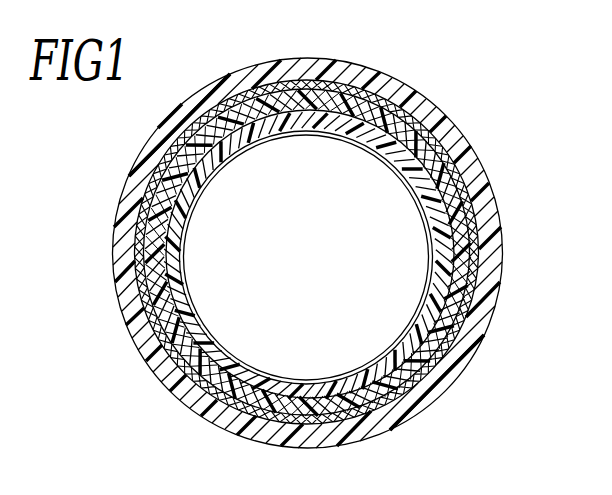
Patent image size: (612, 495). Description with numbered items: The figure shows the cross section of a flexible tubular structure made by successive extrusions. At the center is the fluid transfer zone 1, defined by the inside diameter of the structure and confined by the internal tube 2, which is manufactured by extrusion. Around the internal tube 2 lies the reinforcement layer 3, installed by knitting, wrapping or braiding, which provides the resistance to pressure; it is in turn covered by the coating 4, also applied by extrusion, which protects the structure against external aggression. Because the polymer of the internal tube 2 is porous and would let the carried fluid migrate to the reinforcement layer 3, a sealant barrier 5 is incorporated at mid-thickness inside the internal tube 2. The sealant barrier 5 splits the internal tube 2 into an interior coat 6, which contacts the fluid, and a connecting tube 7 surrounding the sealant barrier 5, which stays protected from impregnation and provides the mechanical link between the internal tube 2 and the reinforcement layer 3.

The fluid transfer zone 1 is at (257, 333).
The internal tube 2 is at (545, 236).
The reinforcement layer 3 is at (431, 135).
The coating 4 is at (356, 72).
The sealant barrier 5 is at (430, 389).
The interior coat 6 is at (436, 283).
The connecting tube 7 is at (458, 252).